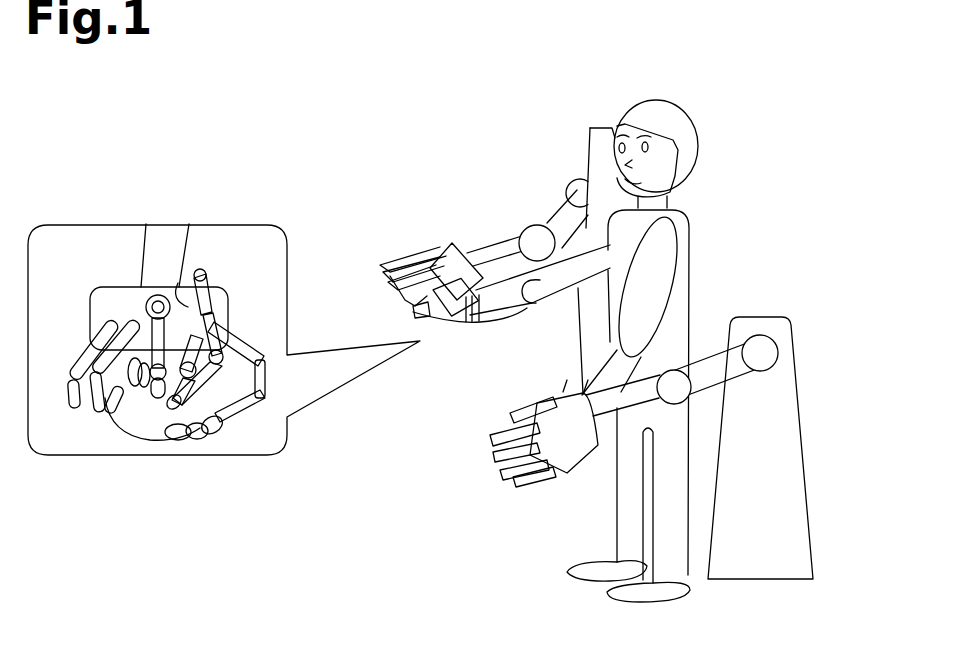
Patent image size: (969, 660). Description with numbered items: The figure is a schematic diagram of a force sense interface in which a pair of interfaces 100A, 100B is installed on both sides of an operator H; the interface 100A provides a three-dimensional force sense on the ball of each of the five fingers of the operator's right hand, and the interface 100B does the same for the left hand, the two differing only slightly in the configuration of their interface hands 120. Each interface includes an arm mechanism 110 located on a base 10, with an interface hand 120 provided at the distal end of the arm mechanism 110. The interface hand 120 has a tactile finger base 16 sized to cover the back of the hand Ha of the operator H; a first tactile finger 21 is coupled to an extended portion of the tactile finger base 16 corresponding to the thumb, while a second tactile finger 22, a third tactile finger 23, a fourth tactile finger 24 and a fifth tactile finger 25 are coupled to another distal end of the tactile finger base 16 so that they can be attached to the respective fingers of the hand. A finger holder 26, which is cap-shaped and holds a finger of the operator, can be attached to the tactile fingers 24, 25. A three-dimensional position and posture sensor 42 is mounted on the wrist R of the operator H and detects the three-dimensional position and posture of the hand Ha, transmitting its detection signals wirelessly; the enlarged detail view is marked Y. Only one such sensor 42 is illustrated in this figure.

The interface 100A is at (548, 125).
The interface 100B is at (808, 202).
The base 10 is at (596, 128).
The arm mechanism 110 is at (540, 199).
The interface hand 120 is at (402, 222).
The tactile finger base 16 is at (440, 262).
The first tactile finger 21 is at (424, 326).
The second tactile finger 22 is at (378, 268).
The third tactile finger 23 is at (492, 452).
The fourth tactile finger 24 is at (506, 482).
The fifth tactile finger 25 is at (75, 368).
The finger holder 26 is at (200, 372).
The three-dimensional position and posture sensor 42 is at (468, 322).
The palm strap Y is at (411, 310).
The wrist R is at (490, 318).
The hand Ha is at (517, 306).
The operator H is at (680, 206).